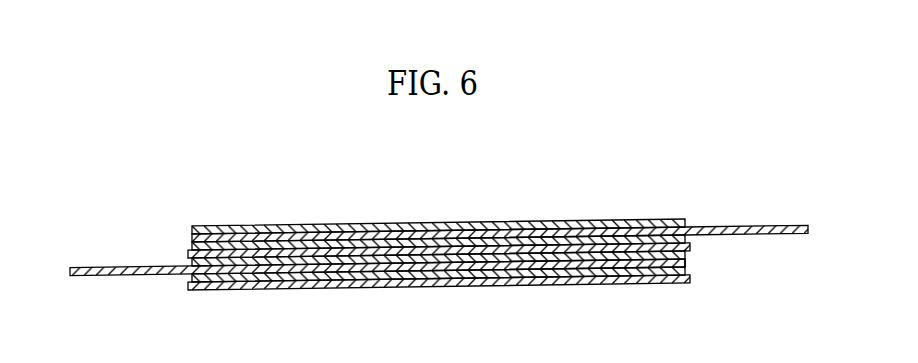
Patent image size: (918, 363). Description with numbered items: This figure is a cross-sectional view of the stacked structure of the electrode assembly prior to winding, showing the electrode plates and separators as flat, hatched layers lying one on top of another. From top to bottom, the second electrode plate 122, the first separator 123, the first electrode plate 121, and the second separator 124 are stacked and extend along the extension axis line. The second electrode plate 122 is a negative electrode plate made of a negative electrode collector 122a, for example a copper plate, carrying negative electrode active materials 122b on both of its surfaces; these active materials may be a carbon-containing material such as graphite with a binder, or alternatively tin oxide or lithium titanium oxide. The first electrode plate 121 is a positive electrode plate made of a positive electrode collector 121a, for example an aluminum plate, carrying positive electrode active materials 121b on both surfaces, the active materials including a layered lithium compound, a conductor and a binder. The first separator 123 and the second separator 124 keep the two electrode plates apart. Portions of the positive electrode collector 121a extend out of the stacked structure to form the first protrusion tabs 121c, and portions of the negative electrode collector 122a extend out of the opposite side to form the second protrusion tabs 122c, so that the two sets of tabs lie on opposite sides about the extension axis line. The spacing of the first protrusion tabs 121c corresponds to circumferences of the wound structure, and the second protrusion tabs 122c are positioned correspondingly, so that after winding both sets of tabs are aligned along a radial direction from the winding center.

The first electrode plate 121 is at (188, 287).
The positive electrode collector 121a is at (690, 264).
The positive electrode active materials 121b is at (425, 259).
The first protrusion tabs 121c is at (138, 267).
The second electrode plate 122 is at (689, 220).
The negative electrode collector 122a is at (190, 226).
The negative electrode active materials 122b is at (343, 231).
The second protrusion tabs 122c is at (748, 229).
The first separator 123 is at (485, 250).
The second separator 124 is at (560, 283).